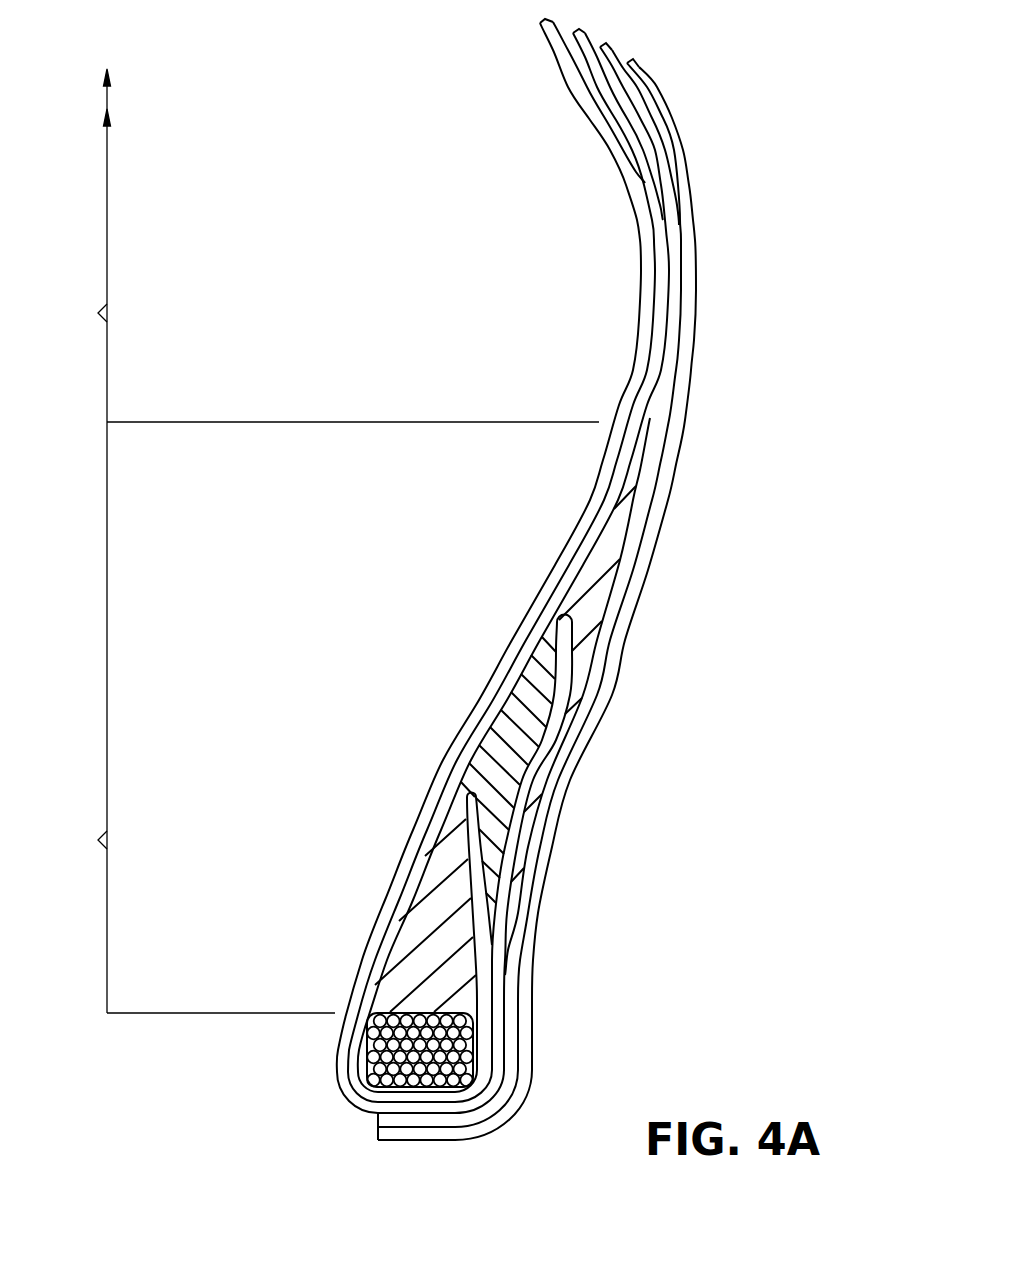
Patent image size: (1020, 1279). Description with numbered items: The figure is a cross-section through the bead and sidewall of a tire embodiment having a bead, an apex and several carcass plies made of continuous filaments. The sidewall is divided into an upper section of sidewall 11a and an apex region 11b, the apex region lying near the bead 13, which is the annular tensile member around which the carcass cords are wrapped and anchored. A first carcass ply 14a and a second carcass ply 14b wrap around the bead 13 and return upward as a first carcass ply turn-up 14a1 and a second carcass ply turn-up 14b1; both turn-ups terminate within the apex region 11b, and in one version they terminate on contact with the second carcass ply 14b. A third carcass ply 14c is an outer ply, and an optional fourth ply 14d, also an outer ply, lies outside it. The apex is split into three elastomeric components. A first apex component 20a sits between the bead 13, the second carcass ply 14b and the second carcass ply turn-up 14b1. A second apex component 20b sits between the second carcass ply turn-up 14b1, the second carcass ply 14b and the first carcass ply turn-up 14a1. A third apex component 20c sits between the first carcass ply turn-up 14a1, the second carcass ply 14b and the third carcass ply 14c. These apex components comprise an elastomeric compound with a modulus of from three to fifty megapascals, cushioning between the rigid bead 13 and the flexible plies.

The first carcass ply 14a is at (593, 90).
The second carcass ply 14b is at (635, 143).
The third carcass ply 14c is at (668, 189).
The fourth ply 14d is at (655, 118).
The first carcass ply turn-up 14a1 is at (560, 612).
The second carcass ply turn-up 14b1 is at (469, 790).
The first apex component 20a is at (418, 937).
The second apex component 20b is at (517, 778).
The third apex component 20c is at (603, 590).
The bead 13 is at (393, 1068).
The upper section of sidewall 11a is at (84, 245).
The apex region of the sidewall 11b is at (328, 717).